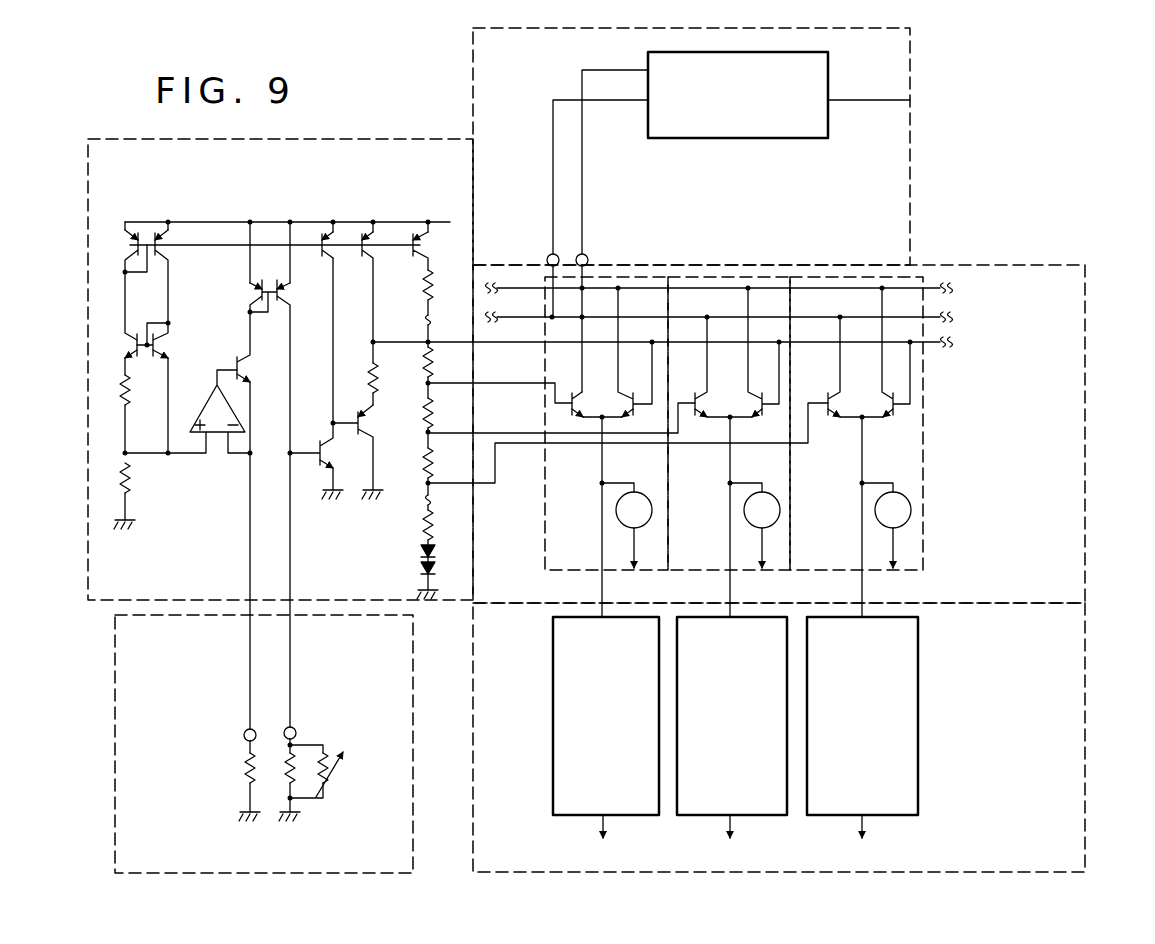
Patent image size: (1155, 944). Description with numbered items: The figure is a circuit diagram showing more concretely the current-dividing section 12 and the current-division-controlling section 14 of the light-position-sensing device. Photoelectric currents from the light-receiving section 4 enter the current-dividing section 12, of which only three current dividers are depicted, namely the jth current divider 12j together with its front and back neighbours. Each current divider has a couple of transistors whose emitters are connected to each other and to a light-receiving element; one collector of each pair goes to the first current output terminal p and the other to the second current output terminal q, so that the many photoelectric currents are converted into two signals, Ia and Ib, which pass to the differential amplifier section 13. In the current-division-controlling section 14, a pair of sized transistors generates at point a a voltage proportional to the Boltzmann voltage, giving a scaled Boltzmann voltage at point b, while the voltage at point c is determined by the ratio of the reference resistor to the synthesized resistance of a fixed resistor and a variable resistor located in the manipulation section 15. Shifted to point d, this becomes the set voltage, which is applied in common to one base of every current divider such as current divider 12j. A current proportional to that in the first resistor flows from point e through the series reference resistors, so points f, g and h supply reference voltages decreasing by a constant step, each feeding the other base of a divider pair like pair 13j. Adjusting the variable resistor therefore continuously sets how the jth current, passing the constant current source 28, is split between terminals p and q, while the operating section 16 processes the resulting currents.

The light-receiving section 4 is at (1085, 812).
The current-dividing section 12 is at (1085, 592).
The current divider 12j is at (790, 503).
The differential amplifier section 13 is at (898, 432).
The differential transistor pair j 13j is at (730, 405).
The current-division-controlling section 14 is at (325, 140).
The manipulation section 15 is at (115, 770).
The operating section 16 is at (910, 200).
The constant current source 28 is at (638, 493).